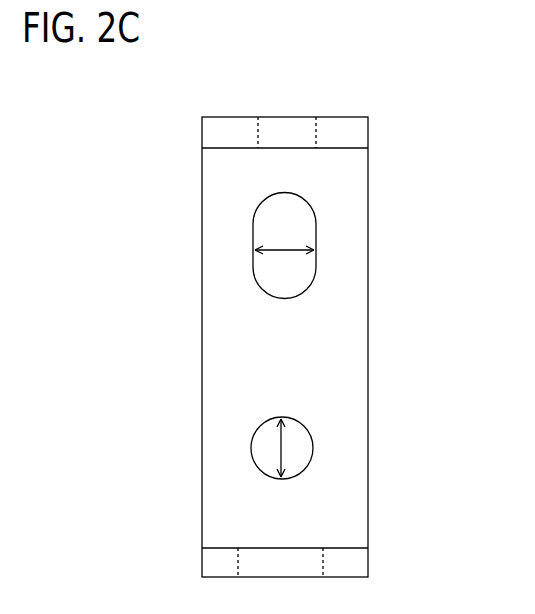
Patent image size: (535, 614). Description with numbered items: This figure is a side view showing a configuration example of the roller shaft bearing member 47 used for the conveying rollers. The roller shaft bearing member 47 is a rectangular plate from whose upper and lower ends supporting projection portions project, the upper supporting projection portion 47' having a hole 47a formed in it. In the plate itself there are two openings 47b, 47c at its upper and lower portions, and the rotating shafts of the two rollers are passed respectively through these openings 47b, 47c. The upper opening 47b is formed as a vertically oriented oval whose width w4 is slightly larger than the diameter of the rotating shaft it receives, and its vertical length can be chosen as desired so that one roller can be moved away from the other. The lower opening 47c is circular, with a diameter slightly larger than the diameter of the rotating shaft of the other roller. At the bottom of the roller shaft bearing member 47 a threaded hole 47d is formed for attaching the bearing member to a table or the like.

The roller shaft bearing member 47 is at (251, 347).
The supporting projection portion 47' is at (313, 113).
The hole 47a is at (270, 142).
The opening 47b is at (283, 292).
The opening 47c is at (265, 465).
The threaded hole 47d is at (247, 545).